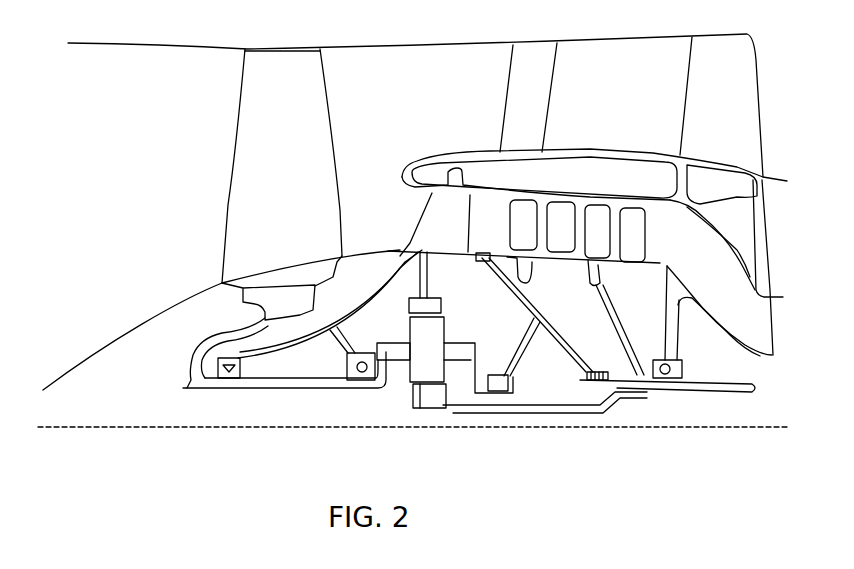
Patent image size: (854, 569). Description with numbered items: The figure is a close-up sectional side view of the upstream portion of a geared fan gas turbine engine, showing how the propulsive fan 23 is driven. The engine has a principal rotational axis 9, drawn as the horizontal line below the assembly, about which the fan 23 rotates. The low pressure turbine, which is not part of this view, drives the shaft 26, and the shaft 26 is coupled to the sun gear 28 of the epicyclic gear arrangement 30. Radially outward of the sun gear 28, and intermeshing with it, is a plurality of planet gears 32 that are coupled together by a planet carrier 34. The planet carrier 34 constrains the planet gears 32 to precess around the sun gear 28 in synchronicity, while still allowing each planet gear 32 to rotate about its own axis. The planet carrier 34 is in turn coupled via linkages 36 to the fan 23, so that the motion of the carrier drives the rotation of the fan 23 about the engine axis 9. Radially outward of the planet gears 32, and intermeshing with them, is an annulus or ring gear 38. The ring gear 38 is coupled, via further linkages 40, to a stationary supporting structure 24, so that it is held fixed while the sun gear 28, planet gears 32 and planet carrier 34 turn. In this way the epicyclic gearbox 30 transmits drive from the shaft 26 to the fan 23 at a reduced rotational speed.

The principal rotational axis 9 is at (190, 430).
The propulsive fan 23 is at (257, 202).
The stationary supporting structure 24 is at (435, 215).
The shaft 26 is at (658, 393).
The sun gear 28 is at (421, 409).
The epicyclic power gearbox 30 is at (378, 362).
The planet gears 32 is at (408, 373).
The planet carrier 34 is at (468, 373).
The linkages 36 is at (383, 380).
The ring gear 38 is at (408, 308).
The linkages 40 is at (432, 270).